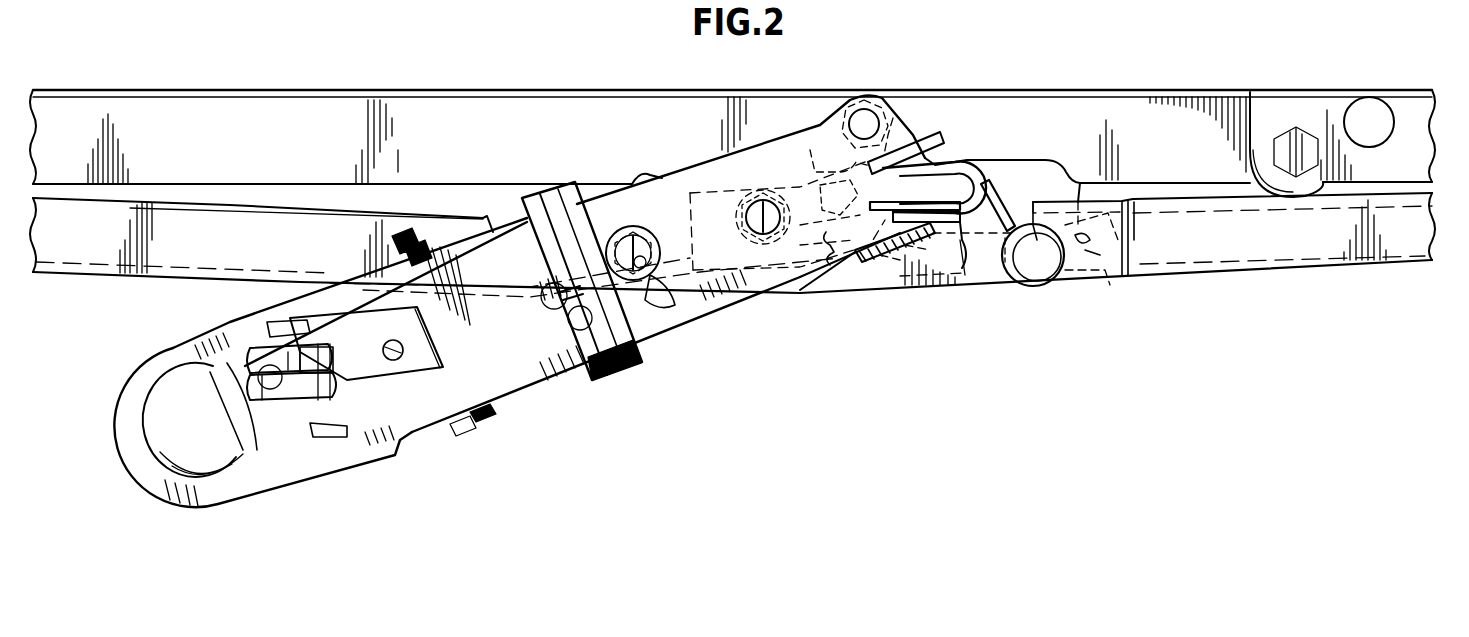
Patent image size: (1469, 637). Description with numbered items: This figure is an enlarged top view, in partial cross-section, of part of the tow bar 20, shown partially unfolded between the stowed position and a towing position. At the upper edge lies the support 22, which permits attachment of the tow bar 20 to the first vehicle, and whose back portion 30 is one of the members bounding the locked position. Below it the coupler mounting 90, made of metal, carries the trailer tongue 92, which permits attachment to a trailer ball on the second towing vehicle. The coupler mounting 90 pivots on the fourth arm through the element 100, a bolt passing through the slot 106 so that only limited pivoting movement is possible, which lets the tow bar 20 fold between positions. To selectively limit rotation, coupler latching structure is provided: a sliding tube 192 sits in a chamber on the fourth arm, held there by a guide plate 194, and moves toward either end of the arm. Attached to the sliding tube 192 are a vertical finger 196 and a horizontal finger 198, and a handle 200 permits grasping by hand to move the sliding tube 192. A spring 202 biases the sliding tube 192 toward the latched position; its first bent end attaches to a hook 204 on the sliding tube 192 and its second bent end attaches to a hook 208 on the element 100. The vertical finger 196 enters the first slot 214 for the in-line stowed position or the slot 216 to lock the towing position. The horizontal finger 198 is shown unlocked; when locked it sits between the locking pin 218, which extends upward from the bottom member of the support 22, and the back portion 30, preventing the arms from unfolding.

The tow bar 20 is at (878, 68).
The support 22 is at (1130, 90).
The back portion 30 is at (588, 90).
The coupler mounting 90 is at (683, 325).
The trailer tongue 92 is at (333, 466).
The element 100 is at (700, 238).
The slot 106 is at (680, 307).
The sliding tube 192 is at (1133, 231).
The guide plate 194 is at (1080, 187).
The vertical finger 196 is at (962, 287).
The horizontal finger 198 is at (815, 150).
The handle 200 is at (1045, 290).
The spring 202 is at (907, 280).
The hook 204 is at (1105, 275).
The hook 208 is at (853, 235).
The first slot 214 is at (947, 152).
The slot 216 is at (882, 265).
The locking pin 218 is at (893, 118).